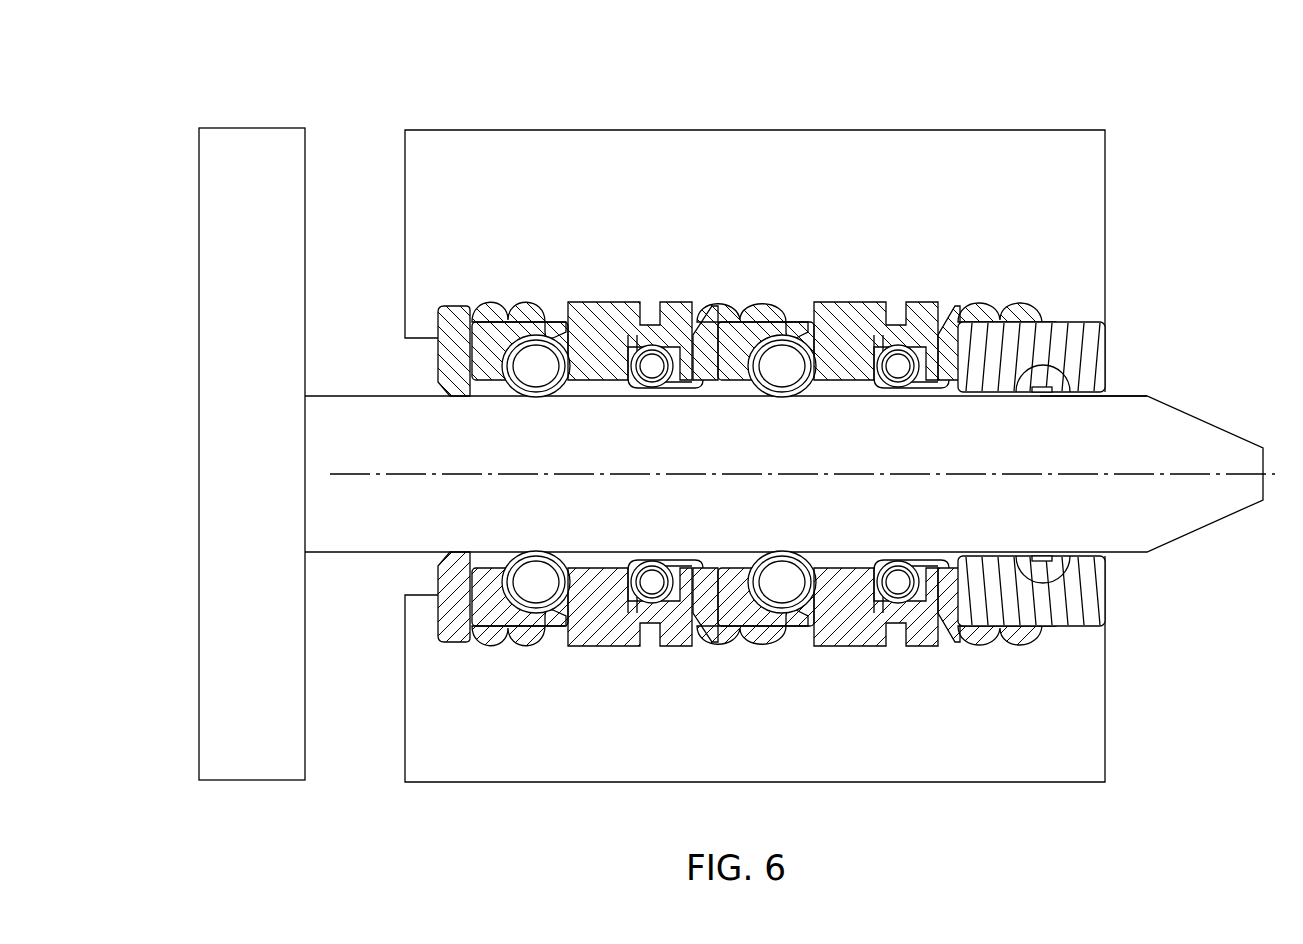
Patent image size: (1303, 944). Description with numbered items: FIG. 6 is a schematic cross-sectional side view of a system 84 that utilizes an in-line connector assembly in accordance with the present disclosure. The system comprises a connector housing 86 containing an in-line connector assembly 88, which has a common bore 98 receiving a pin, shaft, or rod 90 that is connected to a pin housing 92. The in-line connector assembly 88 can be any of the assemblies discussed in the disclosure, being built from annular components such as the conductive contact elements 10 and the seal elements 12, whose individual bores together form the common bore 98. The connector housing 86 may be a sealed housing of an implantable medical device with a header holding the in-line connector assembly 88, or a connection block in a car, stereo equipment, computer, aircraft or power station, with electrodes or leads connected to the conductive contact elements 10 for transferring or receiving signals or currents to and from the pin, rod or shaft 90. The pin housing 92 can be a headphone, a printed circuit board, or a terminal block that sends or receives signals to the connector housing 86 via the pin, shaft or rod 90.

The conductive contact element 10 is at (607, 296).
The seal element 12 is at (736, 294).
The system 84 is at (755, 406).
The connector housing 86 is at (630, 126).
The in-line connector assembly 88 is at (1022, 281).
The pin, shaft, or rod 90 is at (1200, 509).
The pin housing 92 is at (249, 760).
The common bore 98 is at (1055, 410).